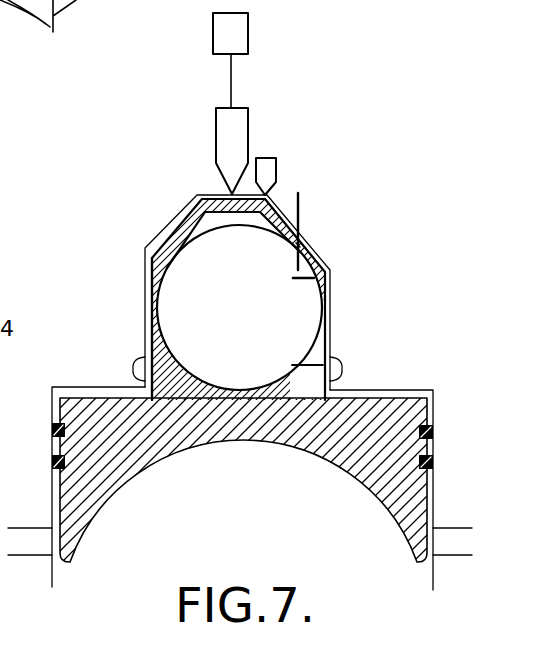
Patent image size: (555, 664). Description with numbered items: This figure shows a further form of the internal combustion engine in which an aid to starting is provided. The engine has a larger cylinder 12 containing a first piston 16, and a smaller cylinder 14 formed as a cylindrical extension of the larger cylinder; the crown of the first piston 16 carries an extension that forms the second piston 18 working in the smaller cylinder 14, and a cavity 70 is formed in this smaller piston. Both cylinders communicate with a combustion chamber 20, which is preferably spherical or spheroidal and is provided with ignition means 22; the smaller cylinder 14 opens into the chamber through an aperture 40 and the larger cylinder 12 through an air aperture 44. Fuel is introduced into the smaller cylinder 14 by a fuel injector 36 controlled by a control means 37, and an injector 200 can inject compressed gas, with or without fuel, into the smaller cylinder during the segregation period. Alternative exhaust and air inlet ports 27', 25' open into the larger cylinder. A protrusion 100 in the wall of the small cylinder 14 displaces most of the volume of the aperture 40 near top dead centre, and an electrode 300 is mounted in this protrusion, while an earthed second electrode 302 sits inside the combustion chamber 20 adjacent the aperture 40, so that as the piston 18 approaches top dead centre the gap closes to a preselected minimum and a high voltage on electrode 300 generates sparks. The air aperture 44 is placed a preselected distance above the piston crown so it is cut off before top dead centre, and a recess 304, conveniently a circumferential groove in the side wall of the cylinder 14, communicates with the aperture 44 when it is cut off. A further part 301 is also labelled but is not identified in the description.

The control means 37 is at (232, 40).
The fuel injector 36 is at (230, 139).
The injector 200 is at (264, 170).
The smaller cylinder 14 is at (208, 199).
The cavity 70 is at (182, 233).
The second piston 18 is at (160, 238).
The left wall 301 is at (148, 317).
The recess 304 is at (331, 359).
The air aperture 44 is at (302, 383).
The combustion chamber 20 is at (218, 292).
The ignition means 22 is at (195, 383).
The aperture 40 is at (285, 247).
The electrode 300 is at (300, 211).
The protrusion 100 is at (296, 243).
The second electrode 302 is at (318, 294).
The larger cylinder 12 is at (263, 471).
The first piston 16 is at (412, 447).
The exhaust port 27' is at (29, 511).
The air inlet port 25' is at (456, 520).